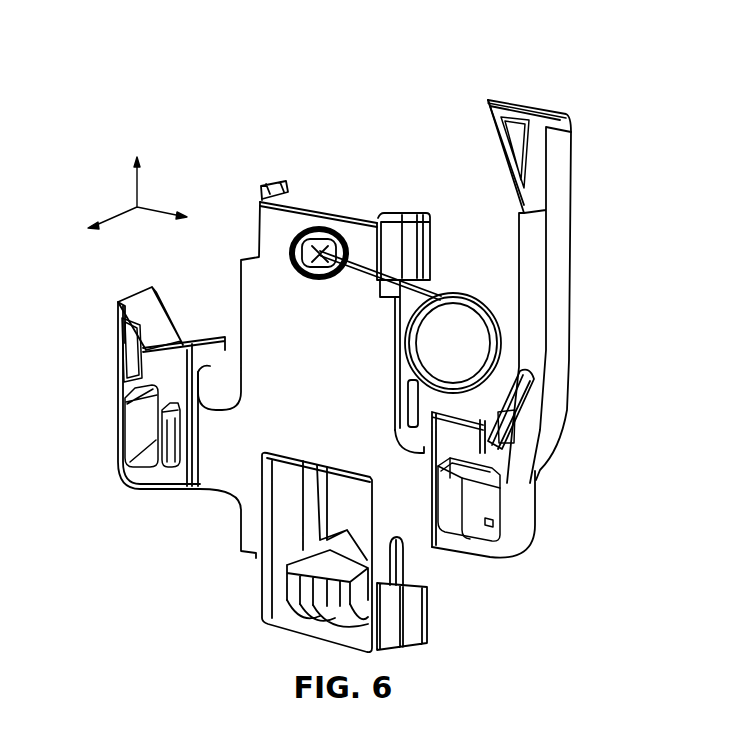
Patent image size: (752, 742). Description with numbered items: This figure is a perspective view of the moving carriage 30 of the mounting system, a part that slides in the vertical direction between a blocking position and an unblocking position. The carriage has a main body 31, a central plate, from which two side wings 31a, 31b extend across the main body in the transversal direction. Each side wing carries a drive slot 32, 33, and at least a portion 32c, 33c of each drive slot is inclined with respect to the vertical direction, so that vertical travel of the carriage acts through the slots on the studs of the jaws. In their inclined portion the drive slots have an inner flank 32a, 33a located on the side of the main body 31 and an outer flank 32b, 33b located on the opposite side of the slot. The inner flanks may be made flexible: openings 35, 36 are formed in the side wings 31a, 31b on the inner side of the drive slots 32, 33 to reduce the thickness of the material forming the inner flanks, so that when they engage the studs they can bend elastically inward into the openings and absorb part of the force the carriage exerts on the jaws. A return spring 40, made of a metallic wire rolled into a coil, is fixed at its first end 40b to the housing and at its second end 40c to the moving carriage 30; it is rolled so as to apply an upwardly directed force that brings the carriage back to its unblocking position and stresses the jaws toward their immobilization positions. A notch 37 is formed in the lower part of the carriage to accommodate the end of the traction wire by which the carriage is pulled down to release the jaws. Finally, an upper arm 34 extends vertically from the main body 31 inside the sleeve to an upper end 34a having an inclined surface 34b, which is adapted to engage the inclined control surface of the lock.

The moving carriage 30 is at (249, 139).
The main body 31 is at (270, 293).
The side wing 31a is at (163, 368).
The side wing 31b is at (463, 544).
The drive slot 32 is at (144, 430).
The inner flank 32a is at (140, 458).
The outer flank 32b is at (140, 414).
The inclined portion 32c is at (145, 399).
The drive slot 33 is at (476, 504).
The inner flank 33a is at (483, 495).
The outer flank 33b is at (503, 551).
The inclined portion 33c is at (520, 437).
The upper arm 34 is at (558, 270).
The upper end 34a is at (532, 102).
The inclined surface 34b is at (494, 150).
The opening 35 is at (172, 441).
The opening 36 is at (465, 468).
The notch 37 is at (287, 595).
The return spring 40 is at (464, 310).
The first end 40b is at (543, 387).
The second end 40c is at (320, 247).